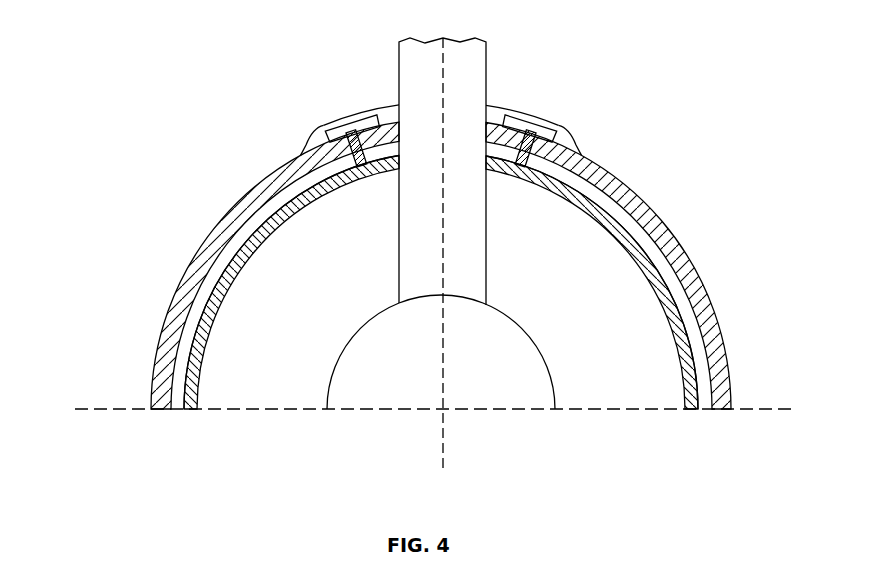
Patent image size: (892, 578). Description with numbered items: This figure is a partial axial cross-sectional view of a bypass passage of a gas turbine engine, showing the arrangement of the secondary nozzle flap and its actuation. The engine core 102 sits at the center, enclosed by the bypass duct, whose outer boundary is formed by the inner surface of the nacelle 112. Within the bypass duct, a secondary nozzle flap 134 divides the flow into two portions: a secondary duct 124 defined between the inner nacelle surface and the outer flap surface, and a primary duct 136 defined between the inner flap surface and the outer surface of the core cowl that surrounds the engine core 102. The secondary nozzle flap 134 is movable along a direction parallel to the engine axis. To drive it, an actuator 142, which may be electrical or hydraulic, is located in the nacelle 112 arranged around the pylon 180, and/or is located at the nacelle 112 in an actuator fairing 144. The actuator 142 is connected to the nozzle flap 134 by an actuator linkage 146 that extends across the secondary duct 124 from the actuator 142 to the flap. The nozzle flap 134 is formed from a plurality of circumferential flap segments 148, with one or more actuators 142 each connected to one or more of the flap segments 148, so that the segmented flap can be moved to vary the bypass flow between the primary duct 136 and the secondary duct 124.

The engine core 102 is at (413, 374).
The nacelle 112 is at (167, 338).
The secondary duct 124 is at (280, 206).
The secondary nozzle flap 134 is at (360, 186).
The primary duct 136 is at (319, 290).
The actuator 142 is at (340, 140).
The actuator fairing 144 is at (388, 107).
The actuator linkage 146 is at (313, 150).
The circumferential flap segments 148 is at (222, 230).
The pylon 180 is at (468, 81).